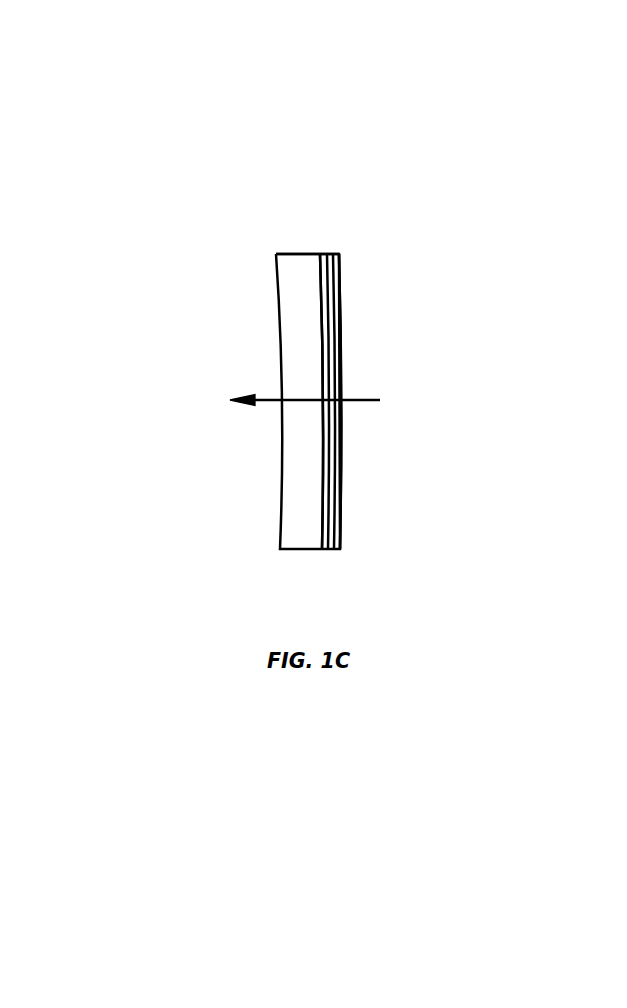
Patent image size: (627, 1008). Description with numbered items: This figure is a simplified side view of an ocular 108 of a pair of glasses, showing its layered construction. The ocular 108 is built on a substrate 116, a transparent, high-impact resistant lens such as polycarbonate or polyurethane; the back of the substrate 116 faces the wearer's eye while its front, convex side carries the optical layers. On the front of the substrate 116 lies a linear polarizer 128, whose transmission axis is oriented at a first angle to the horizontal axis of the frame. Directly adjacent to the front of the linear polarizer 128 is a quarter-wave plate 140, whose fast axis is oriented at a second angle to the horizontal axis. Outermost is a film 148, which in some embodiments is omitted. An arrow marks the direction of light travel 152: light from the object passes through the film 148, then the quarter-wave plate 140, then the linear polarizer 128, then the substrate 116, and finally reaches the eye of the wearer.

The ocular 108 is at (151, 109).
The substrate 116 is at (286, 549).
The linear polarizer 128 is at (320, 254).
The quarter-wave plate 140 is at (322, 549).
The film 148 is at (335, 254).
The direction of light travel 152 is at (380, 400).